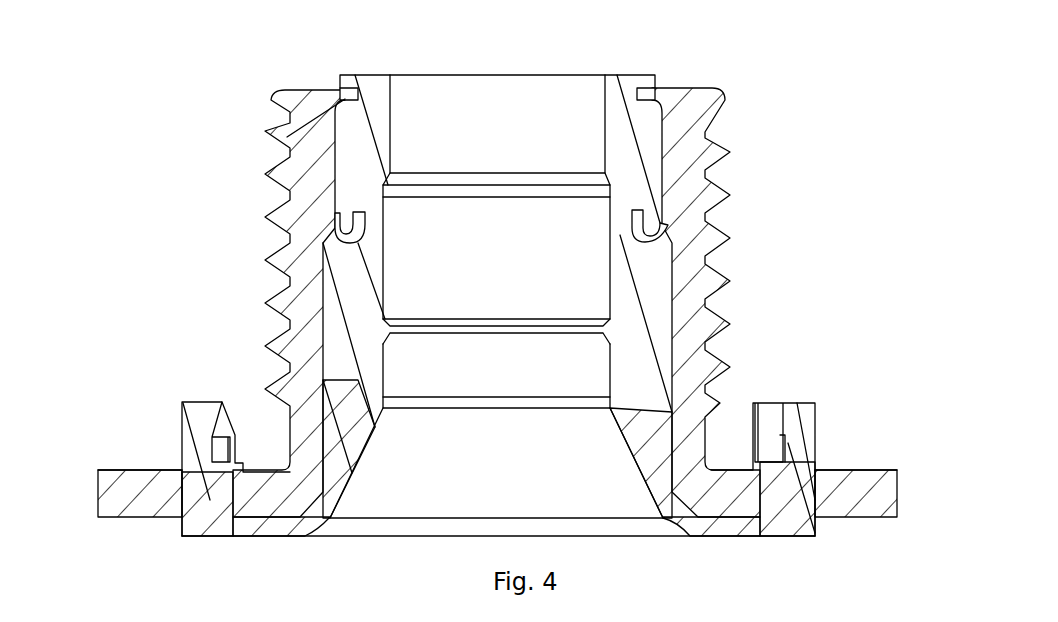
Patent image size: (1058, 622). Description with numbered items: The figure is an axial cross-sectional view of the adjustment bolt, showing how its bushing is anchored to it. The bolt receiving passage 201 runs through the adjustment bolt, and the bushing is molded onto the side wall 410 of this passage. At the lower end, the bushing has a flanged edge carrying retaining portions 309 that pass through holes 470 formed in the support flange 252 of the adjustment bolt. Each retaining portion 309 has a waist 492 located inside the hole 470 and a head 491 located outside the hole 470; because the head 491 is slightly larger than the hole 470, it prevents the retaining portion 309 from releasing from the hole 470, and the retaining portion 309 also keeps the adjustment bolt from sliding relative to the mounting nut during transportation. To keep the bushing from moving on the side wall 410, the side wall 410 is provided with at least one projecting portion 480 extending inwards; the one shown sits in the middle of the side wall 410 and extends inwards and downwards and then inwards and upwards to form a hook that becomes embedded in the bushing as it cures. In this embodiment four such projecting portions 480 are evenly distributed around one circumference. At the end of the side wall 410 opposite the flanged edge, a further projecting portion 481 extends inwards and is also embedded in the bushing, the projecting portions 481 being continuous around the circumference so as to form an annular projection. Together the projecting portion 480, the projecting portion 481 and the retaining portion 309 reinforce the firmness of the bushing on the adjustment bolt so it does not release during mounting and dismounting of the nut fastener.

The bolt receiving passage 201 is at (432, 88).
The projecting portion 481 is at (345, 98).
The projecting portion 480 is at (340, 236).
The side wall 410 is at (285, 312).
The retaining portion 309 is at (195, 423).
The head 491 is at (182, 402).
The hole 470 is at (180, 470).
The support flange 252 is at (873, 478).
The waist 492 is at (182, 517).